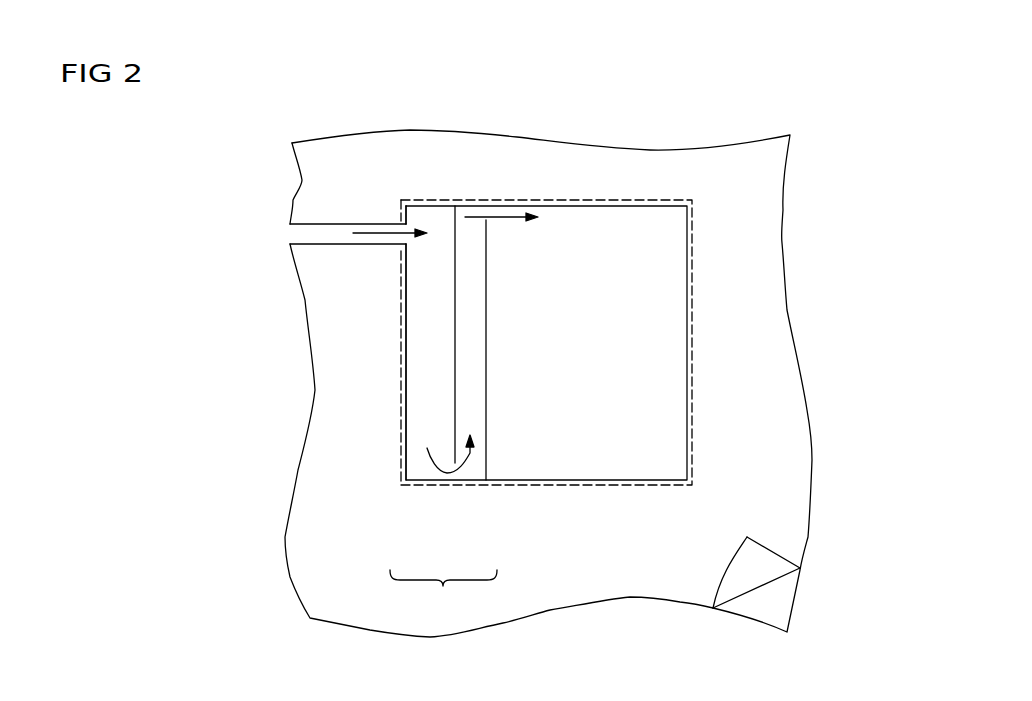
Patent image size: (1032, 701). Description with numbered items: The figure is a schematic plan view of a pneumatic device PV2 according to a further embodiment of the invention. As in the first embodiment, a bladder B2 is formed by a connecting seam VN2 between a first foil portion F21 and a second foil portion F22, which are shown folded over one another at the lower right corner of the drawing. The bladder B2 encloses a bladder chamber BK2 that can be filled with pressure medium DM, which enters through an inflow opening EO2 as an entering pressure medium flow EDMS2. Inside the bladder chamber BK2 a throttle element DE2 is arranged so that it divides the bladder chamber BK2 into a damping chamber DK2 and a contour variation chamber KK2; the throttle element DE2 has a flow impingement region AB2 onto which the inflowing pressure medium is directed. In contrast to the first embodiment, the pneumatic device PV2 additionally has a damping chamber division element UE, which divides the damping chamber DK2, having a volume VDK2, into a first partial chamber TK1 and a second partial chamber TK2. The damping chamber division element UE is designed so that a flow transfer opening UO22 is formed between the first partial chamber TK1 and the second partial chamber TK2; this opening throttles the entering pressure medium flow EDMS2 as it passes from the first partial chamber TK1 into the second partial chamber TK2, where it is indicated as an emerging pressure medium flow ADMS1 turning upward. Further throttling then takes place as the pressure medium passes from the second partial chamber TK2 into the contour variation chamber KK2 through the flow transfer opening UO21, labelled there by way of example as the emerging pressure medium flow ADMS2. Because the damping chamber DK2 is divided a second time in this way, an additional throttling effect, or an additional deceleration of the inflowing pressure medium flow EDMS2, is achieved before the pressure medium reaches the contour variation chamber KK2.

The pneumatic device PV2 is at (270, 128).
The pressure medium DM is at (297, 235).
The entering pressure medium flow EDMS2 is at (372, 235).
The inflow opening EO2 is at (402, 227).
The flow impingement region AB2 is at (452, 232).
The emerging pressure medium flow ADMS2 is at (502, 206).
The flow transfer opening UO21 is at (487, 221).
The connecting seam VN2 is at (687, 235).
The bladder B2 is at (702, 292).
The damping chamber division element UE is at (455, 335).
The throttle element DE2 is at (486, 325).
The bladder chamber BK2 is at (628, 366).
The volume of the damping chamber VDK2 is at (432, 385).
The first partial chamber TK1 is at (432, 410).
The second partial chamber TK2 is at (470, 487).
The flow transfer opening UO22 is at (450, 465).
The emerging pressure medium flow ADMS1 is at (456, 458).
The contour variation chamber KK2 is at (650, 487).
The damping chamber DK2 is at (443, 598).
The second foil portion F22 is at (757, 560).
The first foil portion F21 is at (782, 602).